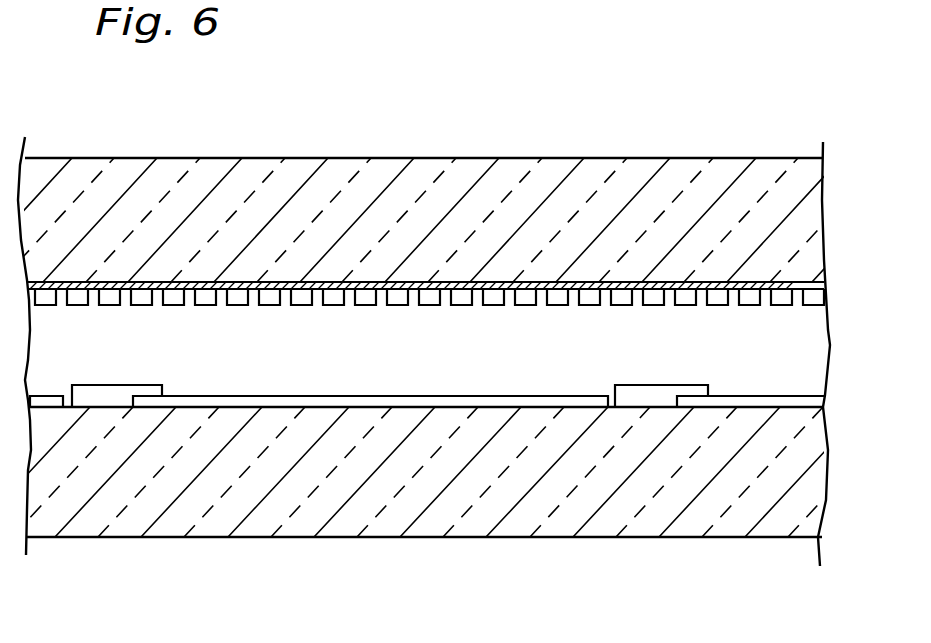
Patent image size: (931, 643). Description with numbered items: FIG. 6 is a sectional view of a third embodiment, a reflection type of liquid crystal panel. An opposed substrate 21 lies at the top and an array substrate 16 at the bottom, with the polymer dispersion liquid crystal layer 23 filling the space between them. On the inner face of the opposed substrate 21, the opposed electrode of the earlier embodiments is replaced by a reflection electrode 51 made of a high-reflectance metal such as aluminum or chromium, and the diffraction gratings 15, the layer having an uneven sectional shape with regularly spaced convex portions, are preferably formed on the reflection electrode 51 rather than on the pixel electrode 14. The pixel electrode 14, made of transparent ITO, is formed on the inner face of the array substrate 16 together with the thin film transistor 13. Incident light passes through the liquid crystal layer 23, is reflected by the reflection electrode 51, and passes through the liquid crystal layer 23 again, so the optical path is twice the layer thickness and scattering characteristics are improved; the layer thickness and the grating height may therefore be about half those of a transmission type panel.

The opposed substrate 21 is at (332, 174).
The reflection electrode 51 is at (545, 286).
The diffraction grating 15 is at (812, 293).
The array substrate 16 is at (312, 522).
The pixel electrode 14 is at (400, 405).
The thin film transistor 13 is at (640, 400).
The polymer dispersion liquid crystal layer 23 is at (788, 367).